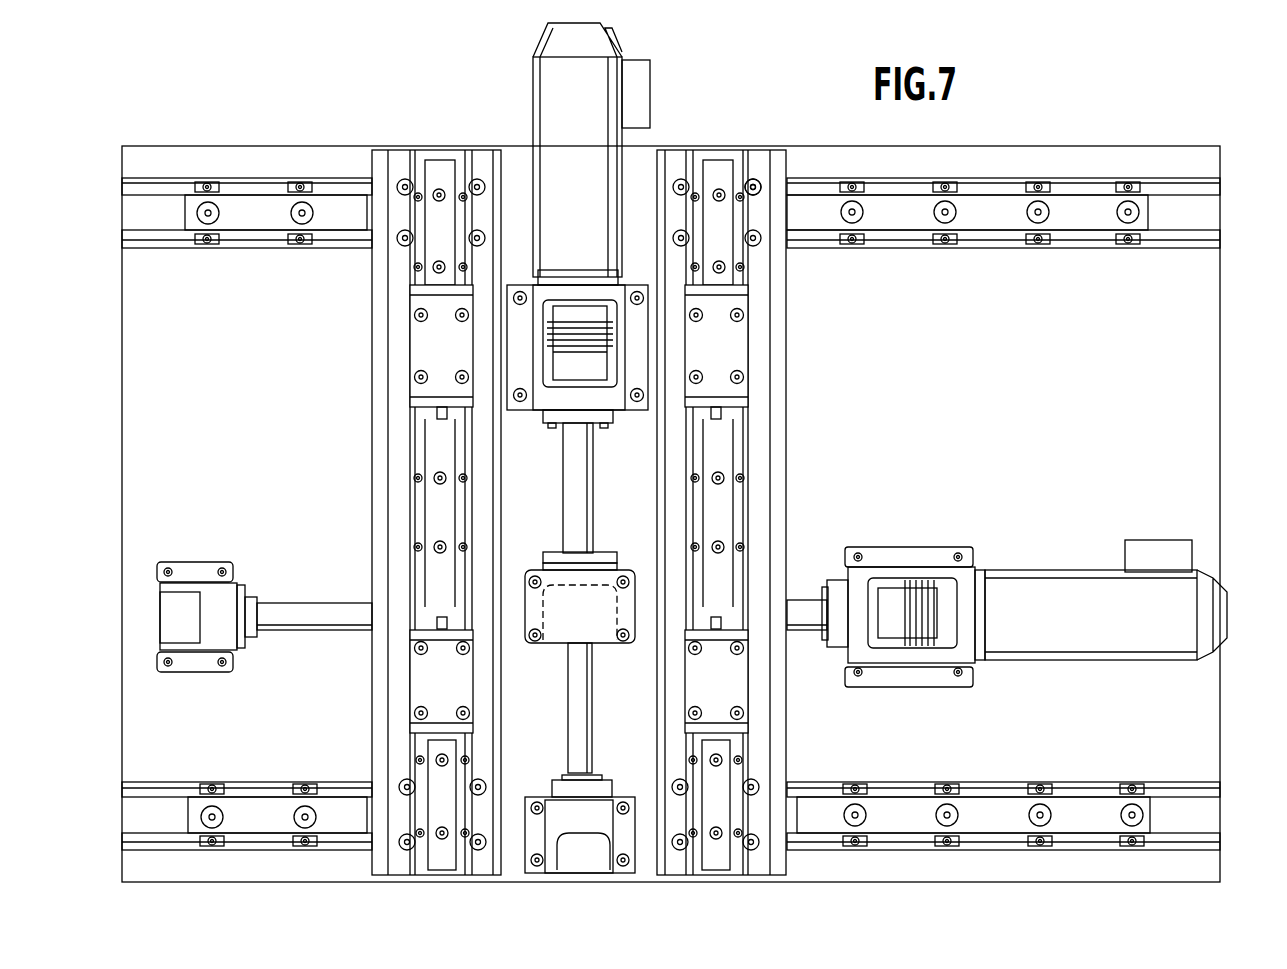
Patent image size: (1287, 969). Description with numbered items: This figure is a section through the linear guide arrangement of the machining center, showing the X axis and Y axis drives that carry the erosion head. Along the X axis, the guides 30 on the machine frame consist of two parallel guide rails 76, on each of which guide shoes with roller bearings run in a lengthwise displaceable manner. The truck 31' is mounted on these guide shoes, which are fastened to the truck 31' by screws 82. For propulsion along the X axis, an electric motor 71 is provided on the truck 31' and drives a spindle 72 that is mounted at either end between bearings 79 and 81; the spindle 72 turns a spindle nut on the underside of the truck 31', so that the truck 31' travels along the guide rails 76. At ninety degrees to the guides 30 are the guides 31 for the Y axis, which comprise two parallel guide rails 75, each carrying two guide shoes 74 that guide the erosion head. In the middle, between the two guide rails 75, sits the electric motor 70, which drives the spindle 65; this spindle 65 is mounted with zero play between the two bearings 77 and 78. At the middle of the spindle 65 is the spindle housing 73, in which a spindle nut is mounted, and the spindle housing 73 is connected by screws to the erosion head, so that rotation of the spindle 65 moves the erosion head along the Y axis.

The guides 30 is at (1205, 237).
The guides 31 is at (436, 489).
The truck 31' is at (762, 512).
The spindle 65 is at (580, 472).
The electric motor 70 is at (557, 115).
The electric motor 71 is at (1045, 597).
The spindle 72 is at (305, 613).
The spindle housing 73 is at (590, 630).
The guide shoes 74 is at (733, 343).
The guide rails 75 is at (440, 445).
The guide rails 76 is at (1068, 217).
The bearing 77 is at (618, 322).
The bearing 78 is at (557, 813).
The bearing 79 is at (208, 600).
The bearing 81 is at (895, 575).
The screws 82 is at (753, 180).